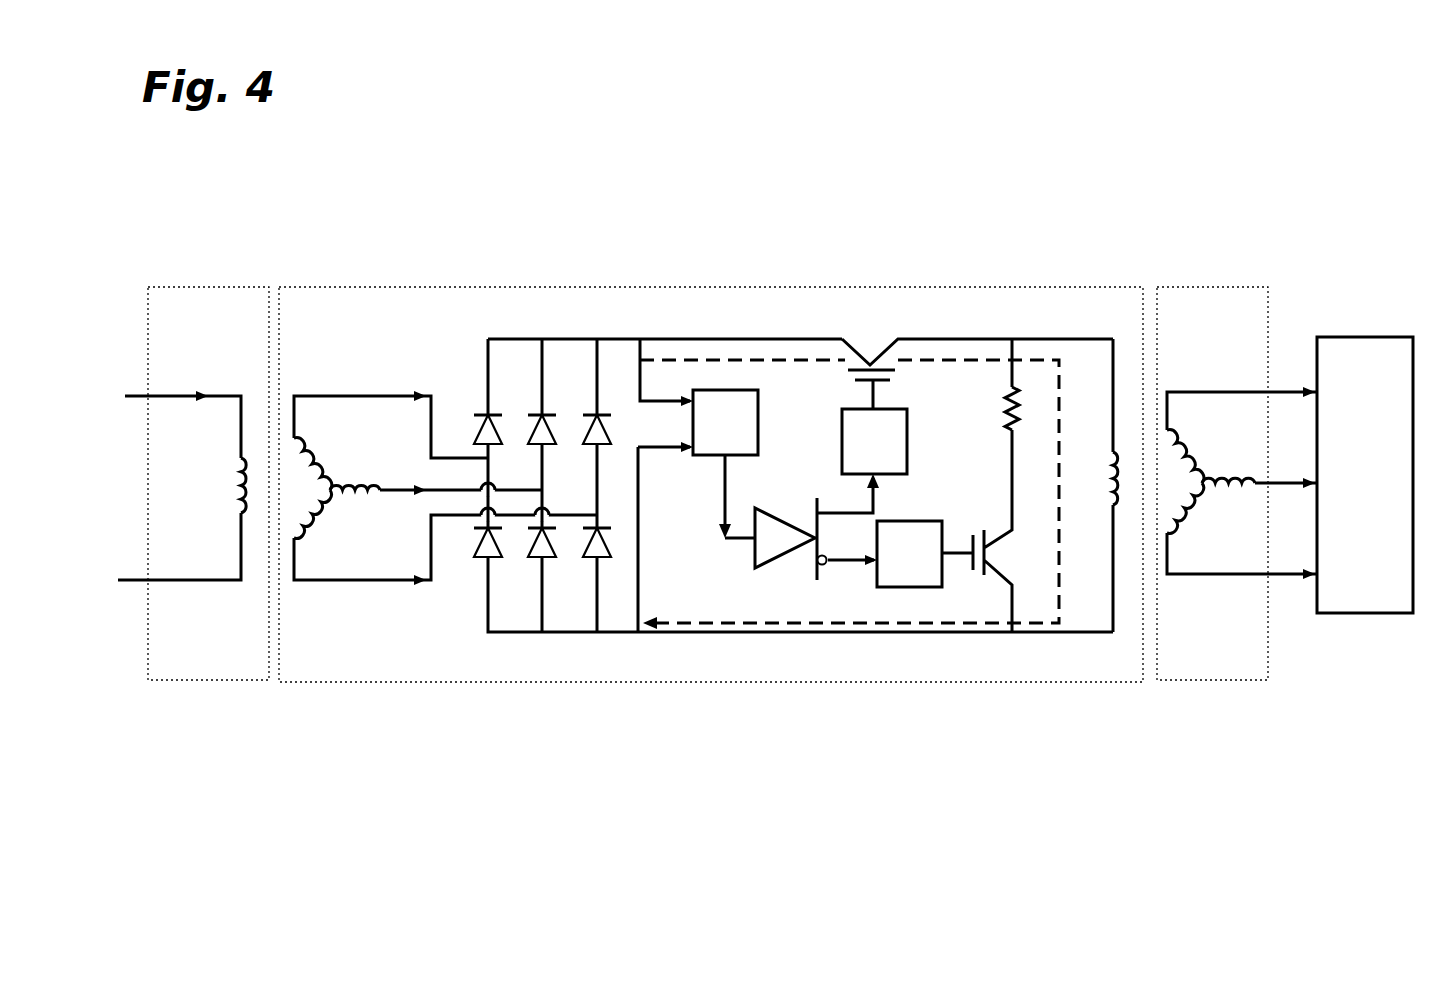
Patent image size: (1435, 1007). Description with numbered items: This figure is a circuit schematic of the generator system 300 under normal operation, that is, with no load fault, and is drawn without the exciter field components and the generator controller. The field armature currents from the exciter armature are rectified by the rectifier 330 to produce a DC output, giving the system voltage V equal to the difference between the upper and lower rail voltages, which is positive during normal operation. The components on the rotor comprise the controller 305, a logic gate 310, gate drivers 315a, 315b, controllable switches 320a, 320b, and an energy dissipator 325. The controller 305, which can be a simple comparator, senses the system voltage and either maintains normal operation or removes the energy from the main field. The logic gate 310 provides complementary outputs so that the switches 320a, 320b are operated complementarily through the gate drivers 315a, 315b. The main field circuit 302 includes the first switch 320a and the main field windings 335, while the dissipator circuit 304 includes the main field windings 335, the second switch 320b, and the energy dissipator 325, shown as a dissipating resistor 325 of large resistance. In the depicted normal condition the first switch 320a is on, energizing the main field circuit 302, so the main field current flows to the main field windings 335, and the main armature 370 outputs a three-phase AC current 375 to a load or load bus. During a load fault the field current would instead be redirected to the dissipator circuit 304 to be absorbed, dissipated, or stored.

The system 300 is at (410, 183).
The main field circuit 302 is at (966, 375).
The dissipator circuit 304 is at (1072, 362).
The controller 305 is at (725, 422).
The logic gate 310 is at (797, 525).
The gate driver 315a is at (874, 441).
The gate driver 315b is at (909, 554).
The first switch 320a is at (888, 342).
The second switch 320b is at (1004, 526).
The energy dissipator 325 is at (1003, 410).
The rectifier 330 is at (468, 593).
The main field windings 335 is at (1110, 467).
The main armature 370 is at (1182, 512).
The three-phase AC current 375 is at (1365, 475).